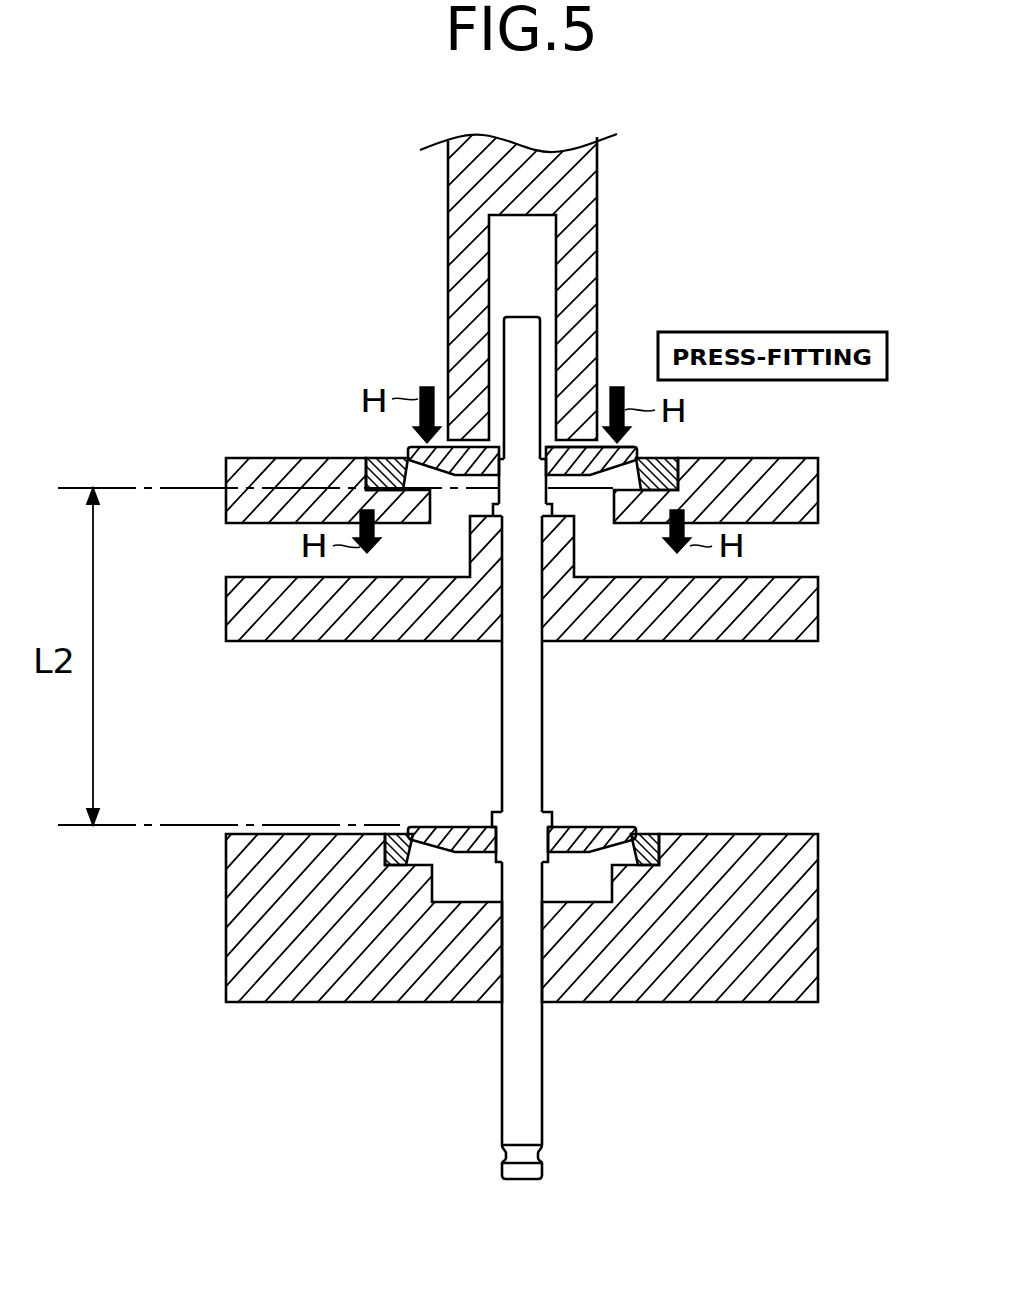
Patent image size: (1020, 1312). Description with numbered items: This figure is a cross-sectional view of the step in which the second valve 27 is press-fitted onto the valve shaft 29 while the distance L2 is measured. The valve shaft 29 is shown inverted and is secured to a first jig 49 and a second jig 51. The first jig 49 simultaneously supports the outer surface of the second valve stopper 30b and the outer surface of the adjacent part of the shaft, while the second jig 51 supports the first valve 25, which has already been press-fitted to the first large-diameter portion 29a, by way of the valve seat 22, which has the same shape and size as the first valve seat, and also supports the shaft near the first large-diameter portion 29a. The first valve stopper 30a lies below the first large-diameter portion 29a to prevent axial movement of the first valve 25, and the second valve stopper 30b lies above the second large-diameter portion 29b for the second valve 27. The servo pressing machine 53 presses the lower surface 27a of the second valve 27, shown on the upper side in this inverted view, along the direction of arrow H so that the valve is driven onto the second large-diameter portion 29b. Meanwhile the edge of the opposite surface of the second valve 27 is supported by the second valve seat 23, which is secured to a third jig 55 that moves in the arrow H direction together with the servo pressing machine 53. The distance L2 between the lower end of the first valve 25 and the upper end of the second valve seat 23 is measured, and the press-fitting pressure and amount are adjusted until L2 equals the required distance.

The servo pressing machine 53 is at (598, 215).
The lower surface of the second valve 27a is at (572, 446).
The second valve seat 23 is at (400, 457).
The third jig 55 is at (820, 490).
The second valve 27 is at (590, 478).
The first jig 49 is at (820, 604).
The second large-diameter portion 29b is at (499, 488).
The second valve stopper 30b is at (494, 510).
The first large-diameter portion 29a is at (484, 826).
The first valve stopper 30a is at (553, 814).
The first valve 25 is at (612, 826).
The valve seat 22 is at (655, 829).
The second jig 51 is at (820, 912).
The valve shaft 29 is at (528, 1086).